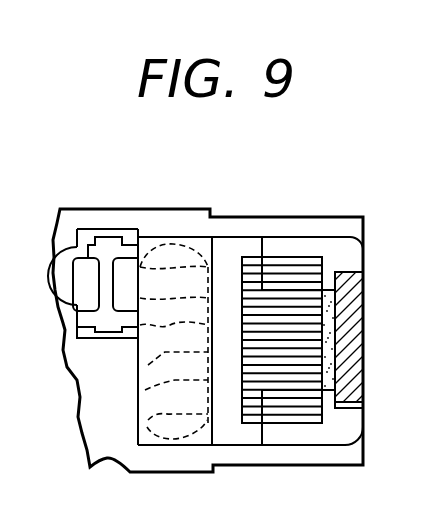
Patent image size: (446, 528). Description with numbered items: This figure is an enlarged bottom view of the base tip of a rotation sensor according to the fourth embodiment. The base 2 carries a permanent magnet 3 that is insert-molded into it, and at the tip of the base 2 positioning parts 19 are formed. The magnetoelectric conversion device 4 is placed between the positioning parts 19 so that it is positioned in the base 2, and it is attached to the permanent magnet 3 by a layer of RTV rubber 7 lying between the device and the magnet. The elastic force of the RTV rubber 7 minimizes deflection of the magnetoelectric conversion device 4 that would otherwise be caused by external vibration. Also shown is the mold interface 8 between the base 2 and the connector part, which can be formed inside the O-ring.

The base 2 is at (243, 465).
The permanent magnet 3 is at (248, 257).
The magnetoelectric conversion device 4 is at (347, 287).
The RTV rubber 7 is at (327, 290).
The mold interface 8 is at (110, 243).
The positioning part 19 is at (350, 247).